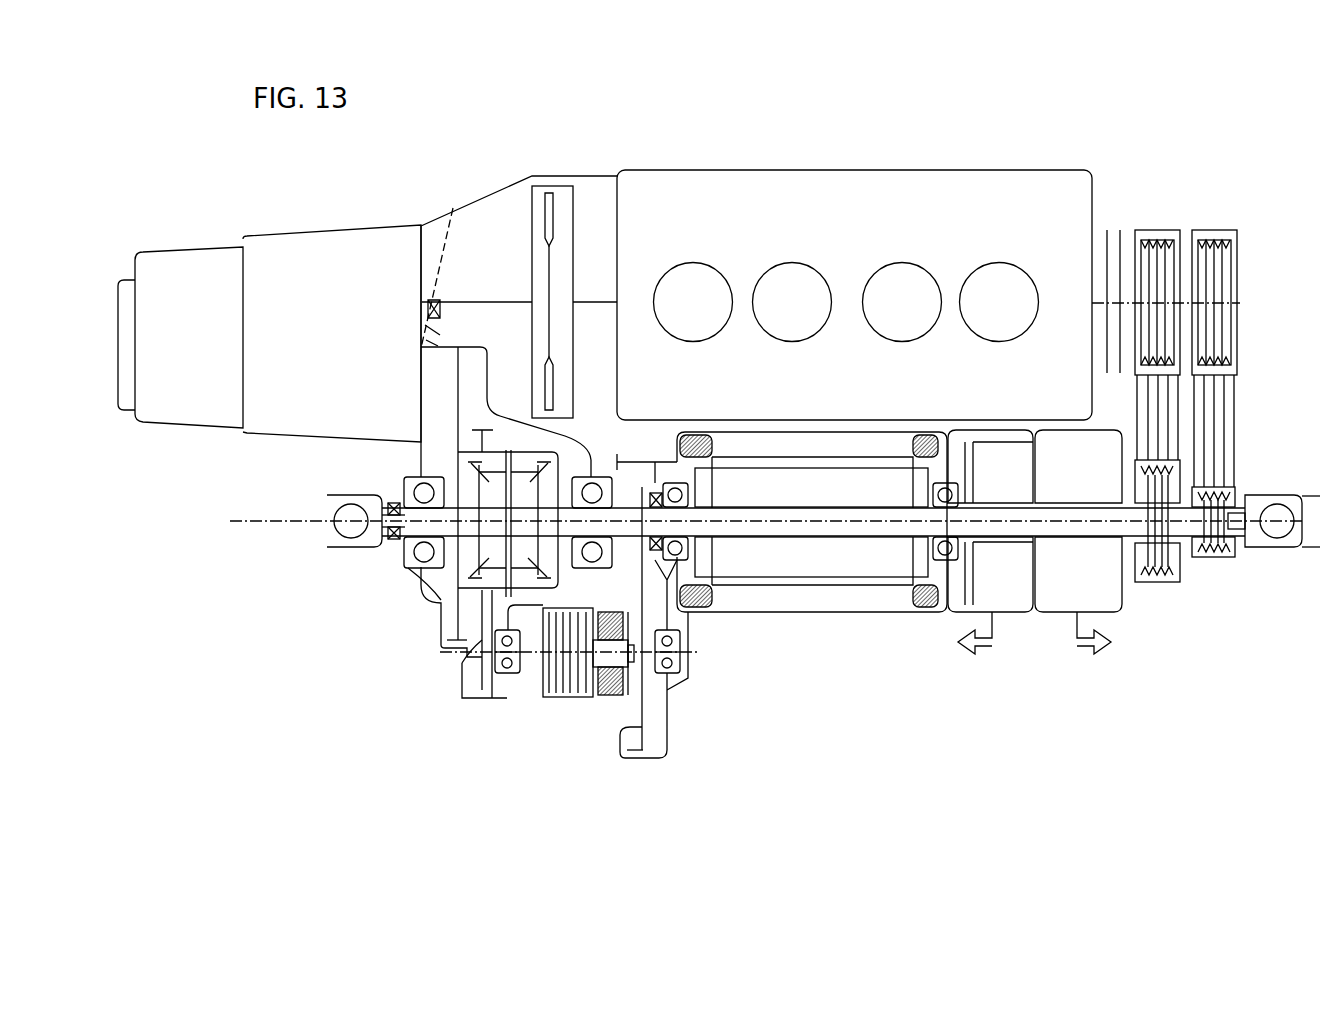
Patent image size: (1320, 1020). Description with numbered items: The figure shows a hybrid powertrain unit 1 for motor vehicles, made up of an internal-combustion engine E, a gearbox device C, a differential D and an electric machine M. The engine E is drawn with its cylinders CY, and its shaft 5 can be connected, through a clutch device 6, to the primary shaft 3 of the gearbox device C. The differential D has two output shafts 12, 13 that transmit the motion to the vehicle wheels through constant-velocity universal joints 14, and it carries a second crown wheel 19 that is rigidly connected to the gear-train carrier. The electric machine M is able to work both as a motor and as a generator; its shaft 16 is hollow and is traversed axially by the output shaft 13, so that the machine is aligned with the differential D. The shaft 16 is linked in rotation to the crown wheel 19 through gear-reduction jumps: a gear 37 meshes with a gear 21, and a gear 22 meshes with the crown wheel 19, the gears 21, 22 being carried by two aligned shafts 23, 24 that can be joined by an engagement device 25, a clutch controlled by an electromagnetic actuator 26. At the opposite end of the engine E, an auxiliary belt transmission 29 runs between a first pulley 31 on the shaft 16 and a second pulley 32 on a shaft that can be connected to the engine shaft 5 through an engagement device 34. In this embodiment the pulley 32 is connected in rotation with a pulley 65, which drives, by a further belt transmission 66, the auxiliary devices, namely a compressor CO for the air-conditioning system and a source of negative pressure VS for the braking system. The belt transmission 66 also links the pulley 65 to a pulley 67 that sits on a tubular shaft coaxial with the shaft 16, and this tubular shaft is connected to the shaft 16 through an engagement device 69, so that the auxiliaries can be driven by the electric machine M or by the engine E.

The hybrid powertrain unit 1 is at (180, 196).
The gearbox device C is at (118, 298).
The clutch device 6 is at (580, 217).
The primary shaft 3 is at (495, 300).
The shaft of the engine 5 is at (598, 300).
The internal-combustion engine E is at (1031, 192).
The cylinder CY is at (762, 268).
The constant-velocity universal joints 14 is at (352, 518).
The output shaft 12 is at (410, 524).
The differential D is at (402, 598).
The second crown wheel 19 is at (484, 600).
The gear 37 is at (628, 478).
The electric machine M is at (802, 616).
The shaft of the electric machine 16 is at (857, 544).
The output shaft 13 is at (791, 506).
The gear 21 is at (619, 752).
The gear 22 is at (480, 642).
The shaft 24 is at (506, 674).
The engagement device 25 is at (555, 698).
The electromagnetic actuator 26 is at (612, 696).
The shaft 23 is at (648, 656).
The compressor CO is at (1011, 600).
The engagement device 69 is at (957, 598).
The source of negative pressure VS is at (1101, 600).
The engagement device 34 is at (1115, 233).
The pulley 65 is at (1160, 263).
The second pulley 32 is at (1220, 265).
The further belt transmission 66 is at (1133, 402).
The auxiliary belt transmission 29 is at (1238, 400).
The pulley 67 is at (1163, 574).
The first pulley 31 is at (1215, 558).